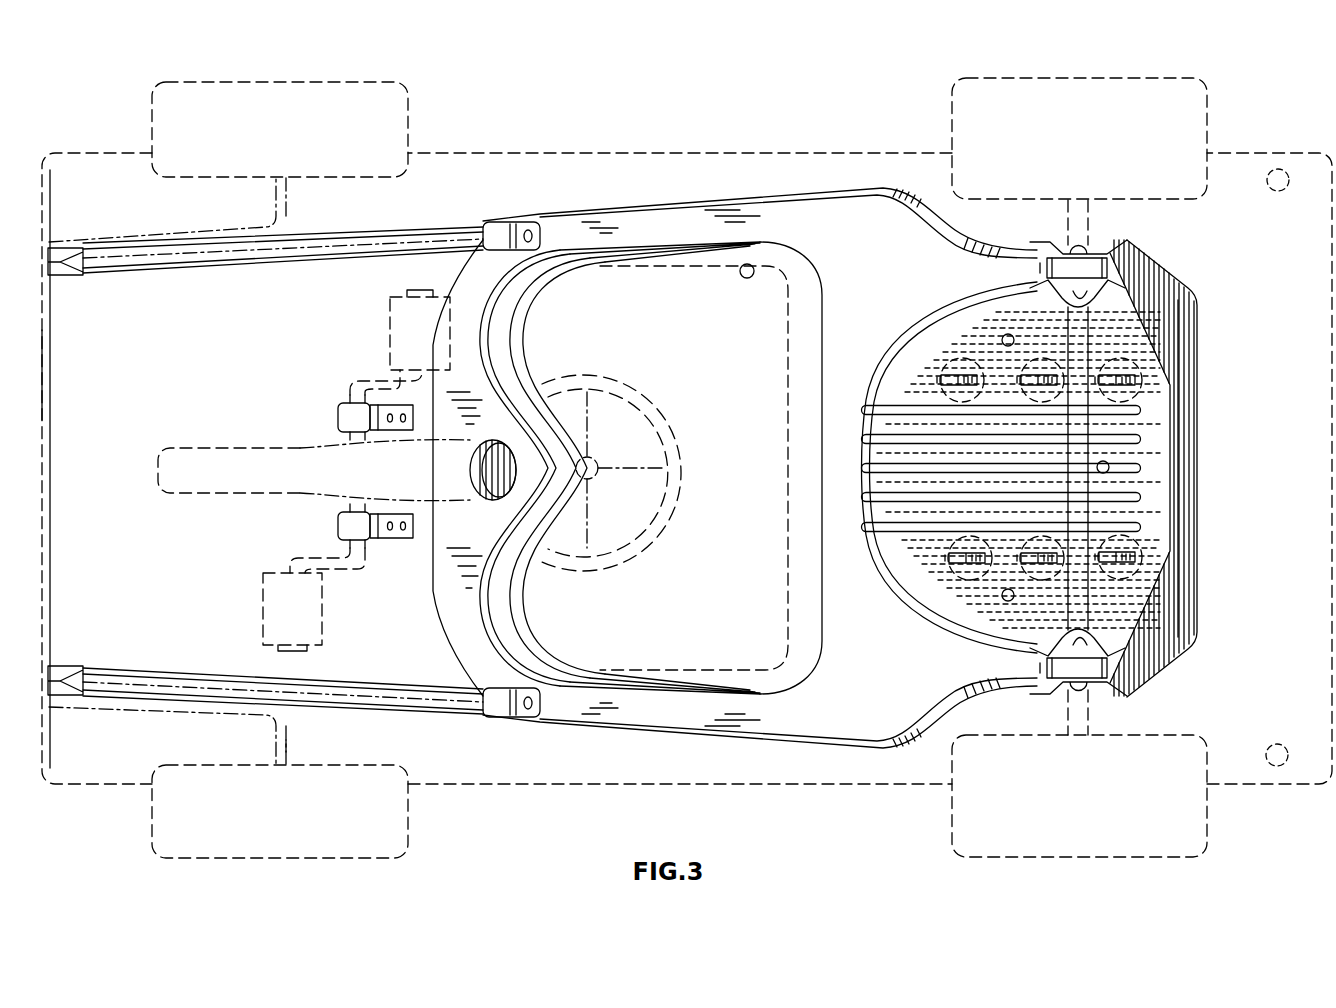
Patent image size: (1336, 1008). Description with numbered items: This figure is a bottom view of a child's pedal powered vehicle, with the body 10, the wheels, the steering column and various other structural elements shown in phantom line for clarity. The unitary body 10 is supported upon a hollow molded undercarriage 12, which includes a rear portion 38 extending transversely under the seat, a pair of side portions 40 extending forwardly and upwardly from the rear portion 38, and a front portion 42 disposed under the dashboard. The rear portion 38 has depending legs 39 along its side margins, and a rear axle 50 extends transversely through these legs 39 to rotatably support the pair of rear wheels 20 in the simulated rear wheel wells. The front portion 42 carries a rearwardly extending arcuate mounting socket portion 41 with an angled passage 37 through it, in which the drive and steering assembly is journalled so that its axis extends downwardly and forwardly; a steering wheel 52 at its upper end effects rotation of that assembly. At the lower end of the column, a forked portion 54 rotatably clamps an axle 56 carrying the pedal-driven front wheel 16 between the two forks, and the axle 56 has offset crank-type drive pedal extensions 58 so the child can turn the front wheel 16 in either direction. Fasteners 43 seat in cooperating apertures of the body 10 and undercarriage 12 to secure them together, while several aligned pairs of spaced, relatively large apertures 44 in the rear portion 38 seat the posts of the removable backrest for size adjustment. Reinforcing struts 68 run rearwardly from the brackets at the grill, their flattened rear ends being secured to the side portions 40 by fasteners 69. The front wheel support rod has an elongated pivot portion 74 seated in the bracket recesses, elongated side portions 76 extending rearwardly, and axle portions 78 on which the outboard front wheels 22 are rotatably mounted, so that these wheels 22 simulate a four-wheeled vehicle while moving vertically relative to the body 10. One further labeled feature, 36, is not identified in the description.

The unitary body 10 is at (805, 785).
The undercarriage 12 is at (827, 463).
The pedal-driven front wheel 16 is at (190, 450).
The rear wheels 20 is at (1127, 77).
The outboard front wheels 22 is at (342, 82).
The seat well 36 is at (760, 267).
The angled passage 37 is at (489, 499).
The rear portion 38 is at (1180, 460).
The depending legs 39 is at (1103, 247).
The side portions 40 is at (657, 236).
The arcuate mounting socket portion 41 is at (550, 433).
The front portion 42 is at (450, 512).
The fasteners 43 is at (1001, 600).
The apertures 44 is at (1122, 388).
The rear axle 50 is at (1090, 717).
The steering wheel 52 is at (665, 412).
The forked portion 54 is at (343, 417).
The axle 56 is at (358, 390).
The drive pedal extensions 58 is at (397, 312).
The reinforcing struts 68 is at (253, 256).
The fasteners 69 is at (536, 234).
The pivot portion 74 is at (53, 368).
The side portions 76 is at (137, 232).
The axle portions 78 is at (288, 740).